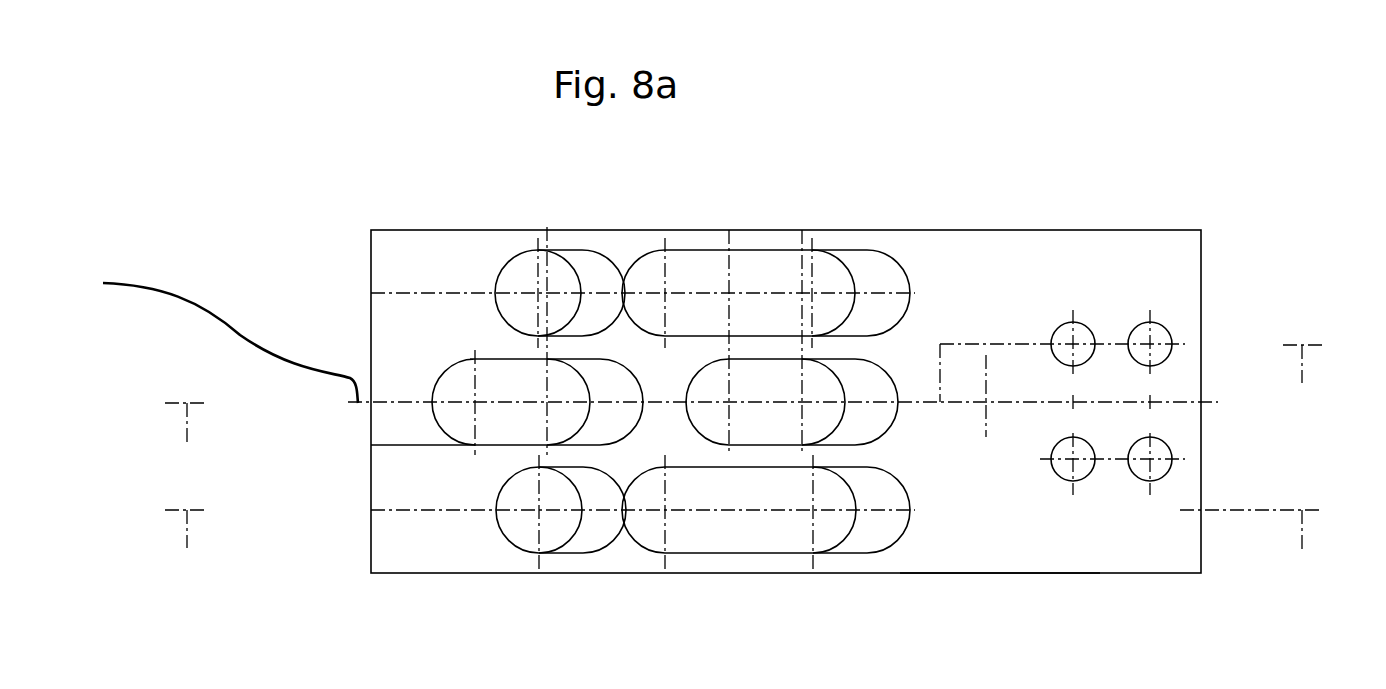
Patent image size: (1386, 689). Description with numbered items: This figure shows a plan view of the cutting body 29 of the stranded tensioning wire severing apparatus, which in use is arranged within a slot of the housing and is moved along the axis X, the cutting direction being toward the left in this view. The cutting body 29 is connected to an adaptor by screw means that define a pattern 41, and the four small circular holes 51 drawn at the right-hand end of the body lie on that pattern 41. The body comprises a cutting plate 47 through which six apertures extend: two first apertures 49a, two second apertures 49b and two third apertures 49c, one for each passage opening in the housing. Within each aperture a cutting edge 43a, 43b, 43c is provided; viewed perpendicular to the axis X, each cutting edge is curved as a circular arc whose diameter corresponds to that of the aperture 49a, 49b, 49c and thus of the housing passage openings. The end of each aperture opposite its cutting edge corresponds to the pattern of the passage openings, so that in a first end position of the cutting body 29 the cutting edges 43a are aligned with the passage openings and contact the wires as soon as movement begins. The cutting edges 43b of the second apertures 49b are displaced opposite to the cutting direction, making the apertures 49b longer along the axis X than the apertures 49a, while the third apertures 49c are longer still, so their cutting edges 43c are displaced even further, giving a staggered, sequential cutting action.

The cutting body 29 is at (247, 97).
The pattern 41 is at (1115, 302).
The cutting edge 43a is at (566, 264).
The cutting edge 43b is at (460, 322).
The cutting edge 43c is at (845, 268).
The cutting plate 47 is at (1005, 562).
The first aperture 49a is at (520, 273).
The second aperture 49b is at (497, 378).
The third aperture 49c is at (763, 263).
The fastening holes 51 is at (1068, 323).